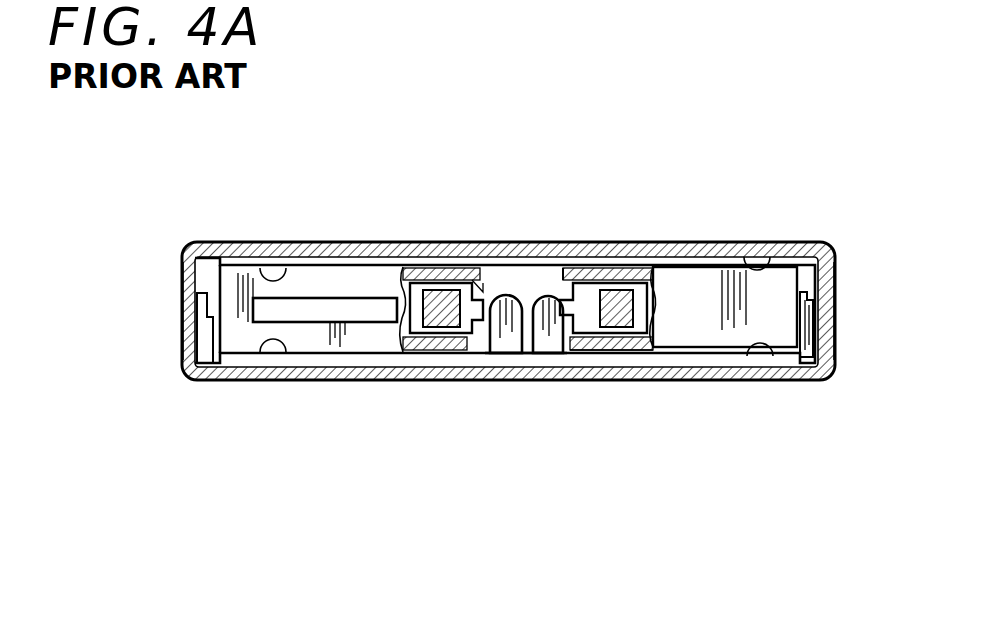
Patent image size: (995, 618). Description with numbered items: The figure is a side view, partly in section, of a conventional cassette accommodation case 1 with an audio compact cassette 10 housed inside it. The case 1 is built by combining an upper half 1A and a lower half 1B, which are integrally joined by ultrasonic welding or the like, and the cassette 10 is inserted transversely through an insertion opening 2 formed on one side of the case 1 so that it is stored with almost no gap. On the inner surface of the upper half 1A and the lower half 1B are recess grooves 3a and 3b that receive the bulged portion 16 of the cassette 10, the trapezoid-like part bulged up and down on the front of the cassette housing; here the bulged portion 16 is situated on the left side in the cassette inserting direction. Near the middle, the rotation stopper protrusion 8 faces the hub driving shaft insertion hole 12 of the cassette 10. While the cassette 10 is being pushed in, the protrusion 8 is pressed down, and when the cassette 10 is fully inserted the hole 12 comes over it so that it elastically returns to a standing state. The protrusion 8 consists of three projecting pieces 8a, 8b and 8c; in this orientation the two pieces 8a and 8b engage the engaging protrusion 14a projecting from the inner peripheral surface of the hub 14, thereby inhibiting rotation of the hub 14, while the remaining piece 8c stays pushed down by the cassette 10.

The cassette accommodation case 1 is at (508, 281).
The upper half 1A is at (403, 245).
The lower half 1B is at (407, 380).
The insertion opening 2 is at (676, 303).
The recess groove 3a is at (255, 268).
The recess groove 3b is at (243, 380).
The rotation stopper protrusion 8 is at (528, 232).
The projecting piece 8a is at (547, 297).
The projecting piece 8b is at (510, 297).
The projecting piece 8c is at (478, 273).
The cassette 10 is at (718, 268).
The hub driving shaft insertion hole 12 is at (563, 277).
The hub 14 is at (628, 380).
The engaging protrusion 14a is at (560, 380).
The bulged portion 16 is at (318, 265).